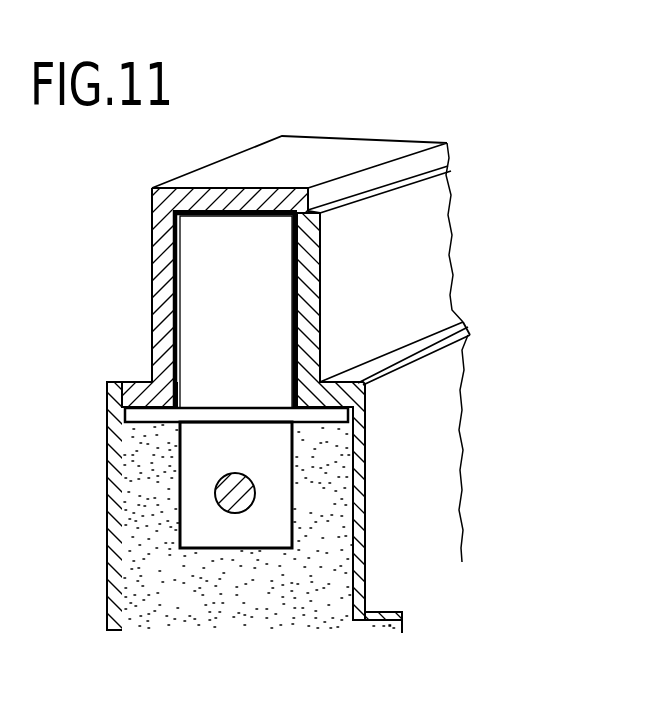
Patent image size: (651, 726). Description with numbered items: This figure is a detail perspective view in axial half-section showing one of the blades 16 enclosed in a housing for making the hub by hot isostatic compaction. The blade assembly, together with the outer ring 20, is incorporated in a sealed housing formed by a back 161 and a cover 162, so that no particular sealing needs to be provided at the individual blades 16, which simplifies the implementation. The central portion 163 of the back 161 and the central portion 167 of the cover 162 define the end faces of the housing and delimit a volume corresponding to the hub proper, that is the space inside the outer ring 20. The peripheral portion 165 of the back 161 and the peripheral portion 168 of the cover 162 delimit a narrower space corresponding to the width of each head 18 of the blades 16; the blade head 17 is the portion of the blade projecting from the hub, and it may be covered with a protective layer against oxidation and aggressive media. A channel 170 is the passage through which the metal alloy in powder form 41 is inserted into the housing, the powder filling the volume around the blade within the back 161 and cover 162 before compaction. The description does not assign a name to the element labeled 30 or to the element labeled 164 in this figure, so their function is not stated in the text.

The blade 16 is at (198, 242).
The blade head 17 is at (262, 337).
The head of the blade 18 is at (238, 535).
The outer ring 20 is at (143, 417).
The bolt 30 is at (234, 484).
The metal alloy in powder form 41 is at (272, 613).
The back 161 is at (150, 338).
The cover 162 is at (439, 473).
The central portion of the back 163 is at (110, 533).
The side wall 164 is at (158, 277).
The peripheral portion of the back 165 is at (210, 197).
The central portion of the cover 167 is at (422, 548).
The peripheral portion of the cover 168 is at (433, 212).
The channel 170 is at (380, 623).